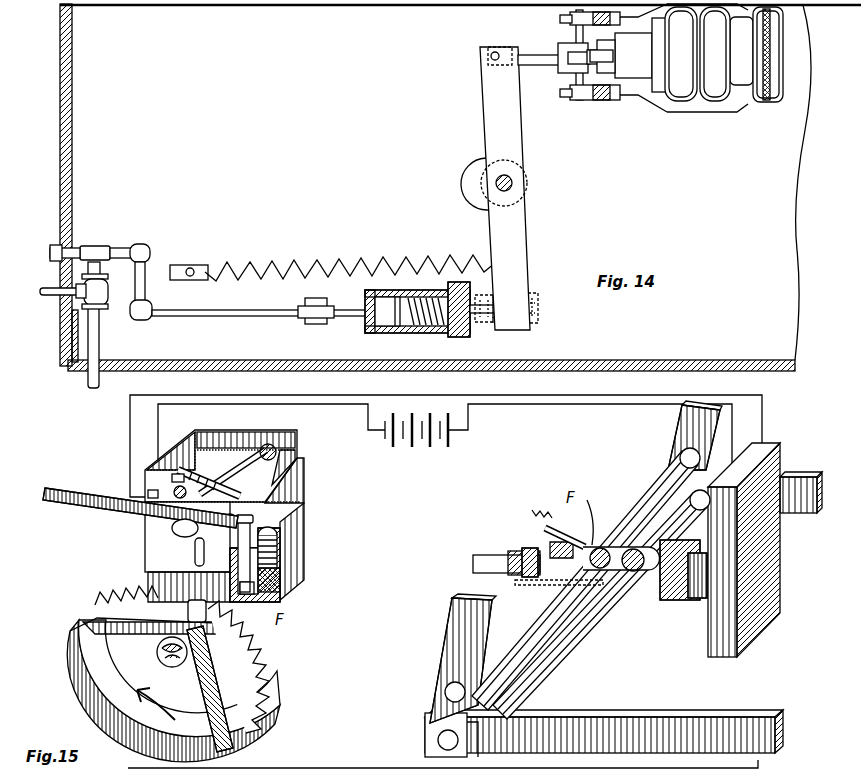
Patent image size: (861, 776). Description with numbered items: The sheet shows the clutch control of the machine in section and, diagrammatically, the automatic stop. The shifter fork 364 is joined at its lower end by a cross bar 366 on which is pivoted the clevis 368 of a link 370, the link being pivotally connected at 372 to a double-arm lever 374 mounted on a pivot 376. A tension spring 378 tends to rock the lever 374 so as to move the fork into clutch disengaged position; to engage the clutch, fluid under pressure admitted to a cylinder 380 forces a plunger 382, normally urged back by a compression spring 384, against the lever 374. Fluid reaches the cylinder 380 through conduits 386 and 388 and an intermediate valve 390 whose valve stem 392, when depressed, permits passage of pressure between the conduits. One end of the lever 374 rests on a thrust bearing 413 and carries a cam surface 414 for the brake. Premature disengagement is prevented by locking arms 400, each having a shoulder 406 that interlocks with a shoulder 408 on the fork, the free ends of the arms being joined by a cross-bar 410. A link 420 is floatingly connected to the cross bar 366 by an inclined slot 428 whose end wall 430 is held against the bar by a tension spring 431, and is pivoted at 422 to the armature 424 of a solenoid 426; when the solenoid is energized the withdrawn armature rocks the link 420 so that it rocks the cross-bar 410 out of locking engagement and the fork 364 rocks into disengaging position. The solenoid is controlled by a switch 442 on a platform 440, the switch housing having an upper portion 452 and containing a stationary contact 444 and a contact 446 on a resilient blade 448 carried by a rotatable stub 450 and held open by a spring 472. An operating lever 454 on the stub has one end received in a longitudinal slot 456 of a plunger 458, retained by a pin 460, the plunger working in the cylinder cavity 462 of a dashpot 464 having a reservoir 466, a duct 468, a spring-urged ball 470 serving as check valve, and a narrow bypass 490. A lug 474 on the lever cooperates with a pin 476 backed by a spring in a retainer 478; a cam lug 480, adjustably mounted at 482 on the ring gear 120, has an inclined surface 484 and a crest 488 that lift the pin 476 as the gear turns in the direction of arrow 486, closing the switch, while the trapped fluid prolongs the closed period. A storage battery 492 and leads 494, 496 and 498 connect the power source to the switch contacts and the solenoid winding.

In FIG. 15, the ring gear 120 is at (263, 725).
In FIG. 14, the shifter fork 364 is at (578, 12).
In FIG. 15, the shifter fork 364 is at (458, 618).
In FIG. 14, the cross bar 366 is at (577, 80).
In FIG. 15, the cross bar 366 is at (527, 617).
In FIG. 14, the clevis 368 is at (566, 46).
In FIG. 15, the clevis 368 is at (532, 546).
In FIG. 14, the link 370 is at (526, 55).
In FIG. 15, the link 370 is at (470, 564).
In FIG. 14, the pivot 372 is at (490, 57).
In FIG. 14, the double-arm lever 374 is at (495, 144).
In FIG. 14, the pivot 376 is at (512, 183).
In FIG. 14, the tension spring 378 is at (312, 262).
In FIG. 14, the cylinder 380 is at (416, 328).
In FIG. 14, the plunger 382 is at (395, 322).
In FIG. 14, the compression spring 384 is at (463, 330).
In FIG. 14, the conduit 386 is at (100, 350).
In FIG. 14, the conduit 388 is at (214, 315).
In FIG. 14, the valve 390 is at (108, 293).
In FIG. 14, the valve stem 392 is at (56, 297).
In FIG. 15, the locking arms 400 is at (797, 475).
In FIG. 15, the shoulder 406 is at (466, 726).
In FIG. 15, the shoulder 408 is at (440, 722).
In FIG. 15, the cross-bar 410 is at (572, 628).
In FIG. 14, the thrust bearing 413 is at (488, 325).
In FIG. 14, the cam surface 414 is at (535, 305).
In FIG. 15, the link 420 is at (612, 580).
In FIG. 15, the pivot 422 is at (656, 585).
In FIG. 14, the armature 424 is at (638, 70).
In FIG. 15, the armature 424 is at (703, 610).
In FIG. 14, the solenoid 426 is at (687, 98).
In FIG. 15, the solenoid 426 is at (728, 655).
In FIG. 15, the inclined slot 428 is at (548, 532).
In FIG. 15, the end wall 430 is at (603, 575).
In FIG. 15, the tension spring 431 is at (543, 515).
In FIG. 15, the platform 440 is at (165, 576).
In FIG. 15, the switch 442 is at (262, 470).
In FIG. 15, the stationary contact 444 is at (174, 490).
In FIG. 15, the contact 446 is at (144, 478).
In FIG. 15, the resilient blade 448 is at (193, 470).
In FIG. 15, the rotatable stub 450 is at (262, 490).
In FIG. 15, the housing top 452 is at (298, 440).
In FIG. 15, the operating lever 454 is at (98, 510).
In FIG. 15, the longitudinal slot 456 is at (245, 522).
In FIG. 15, the plunger 458 is at (246, 515).
In FIG. 15, the pin 460 is at (234, 514).
In FIG. 15, the cylinder cavity 462 is at (262, 562).
In FIG. 15, the dashpot 464 is at (282, 548).
In FIG. 15, the reservoir 466 is at (268, 540).
In FIG. 15, the duct 468 is at (255, 588).
In FIG. 15, the spring-urged ball 470 is at (265, 580).
In FIG. 15, the spring 472 is at (172, 476).
In FIG. 15, the lug 474 is at (180, 539).
In FIG. 15, the pin 476 is at (194, 553).
In FIG. 15, the spring retainer 478 is at (208, 618).
In FIG. 15, the cam lug 480 is at (188, 654).
In FIG. 15, the adjustable mounting 482 is at (222, 665).
In FIG. 15, the inclined surface 484 is at (255, 675).
In FIG. 15, the arrow 486 is at (160, 712).
In FIG. 15, the crest 488 is at (147, 628).
In FIG. 15, the bypass 490 is at (240, 587).
In FIG. 15, the storage battery 492 is at (455, 442).
In FIG. 15, the lead 494 is at (263, 404).
In FIG. 15, the lead 496 is at (537, 405).
In FIG. 15, the lead 498 is at (398, 398).